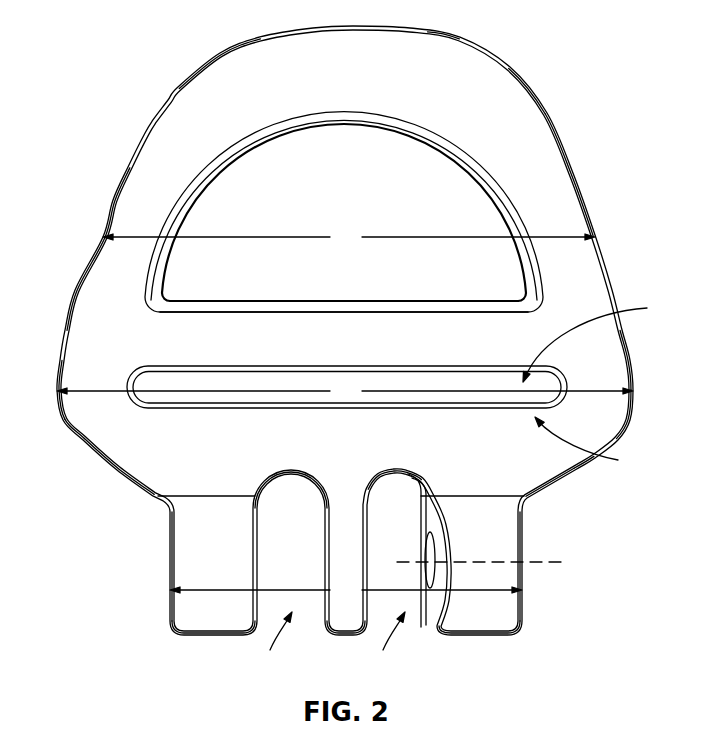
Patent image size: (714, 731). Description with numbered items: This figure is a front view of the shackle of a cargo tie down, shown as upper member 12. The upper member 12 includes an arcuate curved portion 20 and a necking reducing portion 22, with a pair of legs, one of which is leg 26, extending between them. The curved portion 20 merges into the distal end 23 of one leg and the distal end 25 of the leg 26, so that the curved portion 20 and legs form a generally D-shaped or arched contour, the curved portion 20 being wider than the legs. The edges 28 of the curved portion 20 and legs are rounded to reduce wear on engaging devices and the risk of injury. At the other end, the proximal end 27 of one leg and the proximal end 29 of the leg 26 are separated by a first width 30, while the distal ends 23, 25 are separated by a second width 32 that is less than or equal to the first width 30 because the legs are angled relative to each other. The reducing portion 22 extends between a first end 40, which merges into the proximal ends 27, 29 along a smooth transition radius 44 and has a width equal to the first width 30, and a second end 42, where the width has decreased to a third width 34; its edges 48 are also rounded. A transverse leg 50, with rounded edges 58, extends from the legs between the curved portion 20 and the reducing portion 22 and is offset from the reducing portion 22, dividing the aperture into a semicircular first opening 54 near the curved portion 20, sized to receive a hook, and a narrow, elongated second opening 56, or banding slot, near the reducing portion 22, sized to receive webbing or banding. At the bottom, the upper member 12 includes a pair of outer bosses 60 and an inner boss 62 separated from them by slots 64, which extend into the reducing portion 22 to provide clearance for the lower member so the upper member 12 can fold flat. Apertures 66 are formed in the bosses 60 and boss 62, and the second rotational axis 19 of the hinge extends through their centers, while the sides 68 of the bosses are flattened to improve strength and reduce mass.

The upper member 12 is at (569, 55).
The second rotational axis 19 is at (567, 563).
The curved portion 20 is at (460, 67).
The reducing portion 22 is at (142, 473).
The distal end 23 is at (562, 182).
The distal end 25 is at (127, 200).
The leg 26 is at (92, 327).
The proximal end 27 is at (617, 368).
The edges 28 is at (223, 60).
The proximal end 29 is at (75, 377).
The first width 30 is at (345, 387).
The second width 32 is at (349, 237).
The third width 34 is at (346, 590).
The first end 40 is at (593, 446).
The second end 42 is at (523, 485).
The smooth transition radius 44 is at (615, 410).
The edges 48 is at (90, 455).
The transverse leg 50 is at (338, 320).
The first opening 54 is at (344, 150).
The second opening 56 is at (604, 339).
The edges 58 is at (227, 310).
The bosses 60 is at (208, 620).
The boss 62 is at (347, 622).
The slots 64 is at (338, 576).
The apertures 66 is at (428, 561).
The sides 68 is at (203, 579).